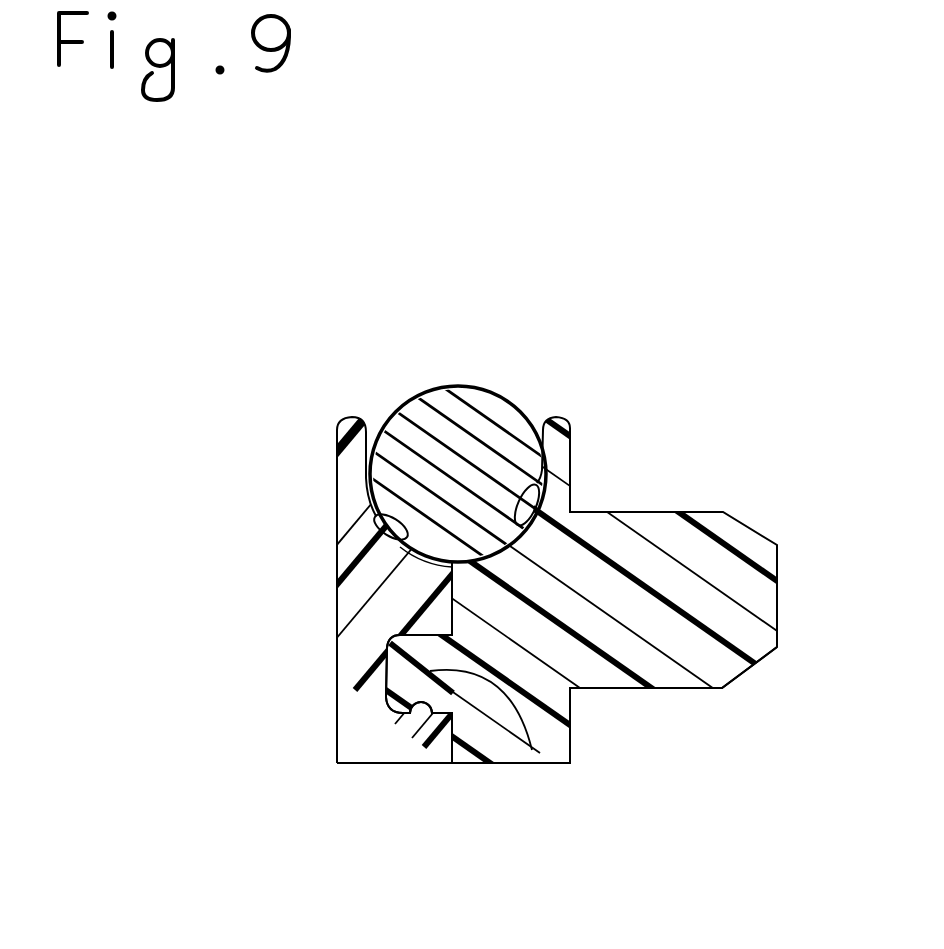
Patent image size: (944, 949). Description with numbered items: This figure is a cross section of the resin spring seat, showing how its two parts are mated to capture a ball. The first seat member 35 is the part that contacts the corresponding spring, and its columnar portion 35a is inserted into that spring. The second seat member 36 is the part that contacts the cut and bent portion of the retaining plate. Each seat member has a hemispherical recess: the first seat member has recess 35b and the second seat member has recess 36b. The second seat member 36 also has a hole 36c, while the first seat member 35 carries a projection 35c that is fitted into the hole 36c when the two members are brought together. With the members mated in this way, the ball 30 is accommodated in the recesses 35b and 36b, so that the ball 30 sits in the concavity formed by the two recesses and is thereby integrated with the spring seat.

The ball 30 is at (475, 427).
The first seat member 35 is at (578, 417).
The columnar portion 35a is at (675, 690).
The hemispherical recess 35b is at (543, 470).
The projection 35c is at (532, 750).
The second seat member 36 is at (328, 444).
The hemispherical recess 36b is at (337, 547).
The hole 36c is at (399, 714).